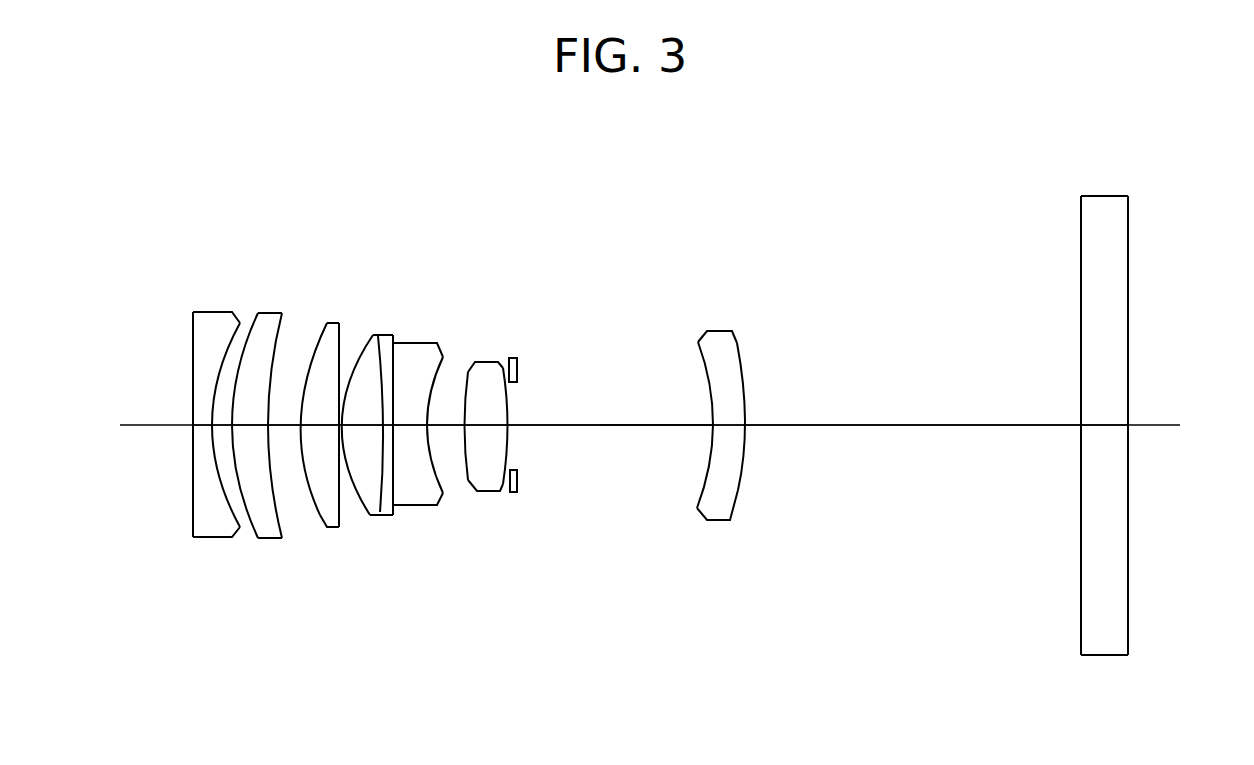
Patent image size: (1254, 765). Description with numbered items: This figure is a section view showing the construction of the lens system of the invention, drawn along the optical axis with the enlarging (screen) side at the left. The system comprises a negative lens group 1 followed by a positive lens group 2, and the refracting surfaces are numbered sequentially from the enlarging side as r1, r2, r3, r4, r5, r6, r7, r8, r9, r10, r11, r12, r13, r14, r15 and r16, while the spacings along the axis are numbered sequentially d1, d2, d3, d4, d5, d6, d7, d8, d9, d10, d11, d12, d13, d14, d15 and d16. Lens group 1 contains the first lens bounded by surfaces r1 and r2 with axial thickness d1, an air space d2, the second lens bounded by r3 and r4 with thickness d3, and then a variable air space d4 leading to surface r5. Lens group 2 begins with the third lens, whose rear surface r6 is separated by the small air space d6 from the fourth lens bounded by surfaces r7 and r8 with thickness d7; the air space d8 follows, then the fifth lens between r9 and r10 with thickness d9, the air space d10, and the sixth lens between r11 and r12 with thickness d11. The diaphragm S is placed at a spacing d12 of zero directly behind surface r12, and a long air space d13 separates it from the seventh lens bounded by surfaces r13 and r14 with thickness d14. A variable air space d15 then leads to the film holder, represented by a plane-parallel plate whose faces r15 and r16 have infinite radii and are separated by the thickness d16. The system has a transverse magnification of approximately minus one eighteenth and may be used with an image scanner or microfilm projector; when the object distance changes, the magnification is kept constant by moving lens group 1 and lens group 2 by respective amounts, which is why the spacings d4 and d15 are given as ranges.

The lens group 1 is at (293, 663).
The lens group 2 is at (762, 663).
The diaphragm S is at (513, 356).
The radius of curvature r1 is at (193, 334).
The radius of curvature r2 is at (231, 336).
The radius of curvature r3 is at (252, 336).
The radius of curvature r4 is at (280, 336).
The radius of curvature r5 is at (318, 338).
The radius of curvature r6 is at (338, 336).
The radius of curvature r7 is at (373, 338).
The radius of curvature r8 is at (385, 365).
The radius of curvature r9 is at (395, 367).
The radius of curvature r10 is at (437, 373).
The radius of curvature r11 is at (467, 377).
The radius of curvature r12 is at (509, 398).
The radius of curvature r13 is at (704, 361).
The radius of curvature r14 is at (740, 362).
The radius of curvature r15 is at (1080, 294).
The radius of curvature r16 is at (1129, 287).
The spacing on axis d1 is at (160, 482).
The spacing on axis d2 is at (180, 572).
The spacing on axis d3 is at (233, 617).
The spacing on axis d4 is at (283, 572).
The spacing on axis d5 is at (307, 618).
The spacing on axis d6 is at (345, 572).
The spacing on axis d7 is at (374, 620).
The spacing on axis d8 is at (410, 572).
The spacing on axis d9 is at (442, 620).
The spacing on axis d10 is at (480, 572).
The spacing on axis d11 is at (520, 620).
The spacing on axis d12 is at (567, 572).
The spacing on axis d13 is at (668, 572).
The spacing on axis d14 is at (762, 572).
The spacing on axis d15 is at (932, 566).
The spacing on axis d16 is at (1047, 569).